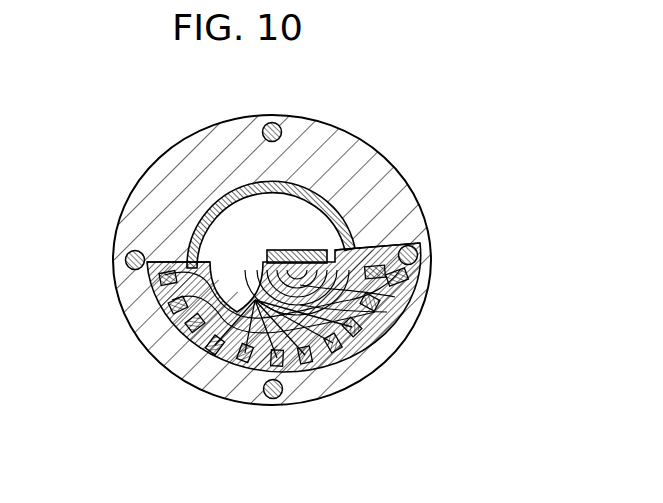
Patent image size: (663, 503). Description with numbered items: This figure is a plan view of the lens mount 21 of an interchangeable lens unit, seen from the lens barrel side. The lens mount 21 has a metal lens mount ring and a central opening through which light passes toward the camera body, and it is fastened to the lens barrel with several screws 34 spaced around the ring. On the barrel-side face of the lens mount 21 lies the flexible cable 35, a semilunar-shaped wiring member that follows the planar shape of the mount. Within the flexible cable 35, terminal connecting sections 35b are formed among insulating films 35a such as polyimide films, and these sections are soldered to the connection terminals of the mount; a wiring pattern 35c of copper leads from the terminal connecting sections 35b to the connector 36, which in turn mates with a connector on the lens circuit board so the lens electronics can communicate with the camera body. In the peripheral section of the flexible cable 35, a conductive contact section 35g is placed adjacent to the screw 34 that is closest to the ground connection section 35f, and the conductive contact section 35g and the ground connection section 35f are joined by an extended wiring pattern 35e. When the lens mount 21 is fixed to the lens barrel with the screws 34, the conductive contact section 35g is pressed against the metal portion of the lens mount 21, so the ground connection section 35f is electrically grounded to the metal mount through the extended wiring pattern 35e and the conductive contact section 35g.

The lens mount 21 is at (398, 153).
The screw 34 is at (269, 122).
The flexible cable 35 is at (382, 340).
The insulating film 35a is at (412, 244).
The terminal connecting section 35b is at (190, 325).
The wiring pattern 35c is at (185, 261).
The extended wiring pattern 35e is at (398, 297).
The ground connection section 35f is at (387, 312).
The conductive contact section 35g is at (405, 279).
The connector 36 is at (263, 250).